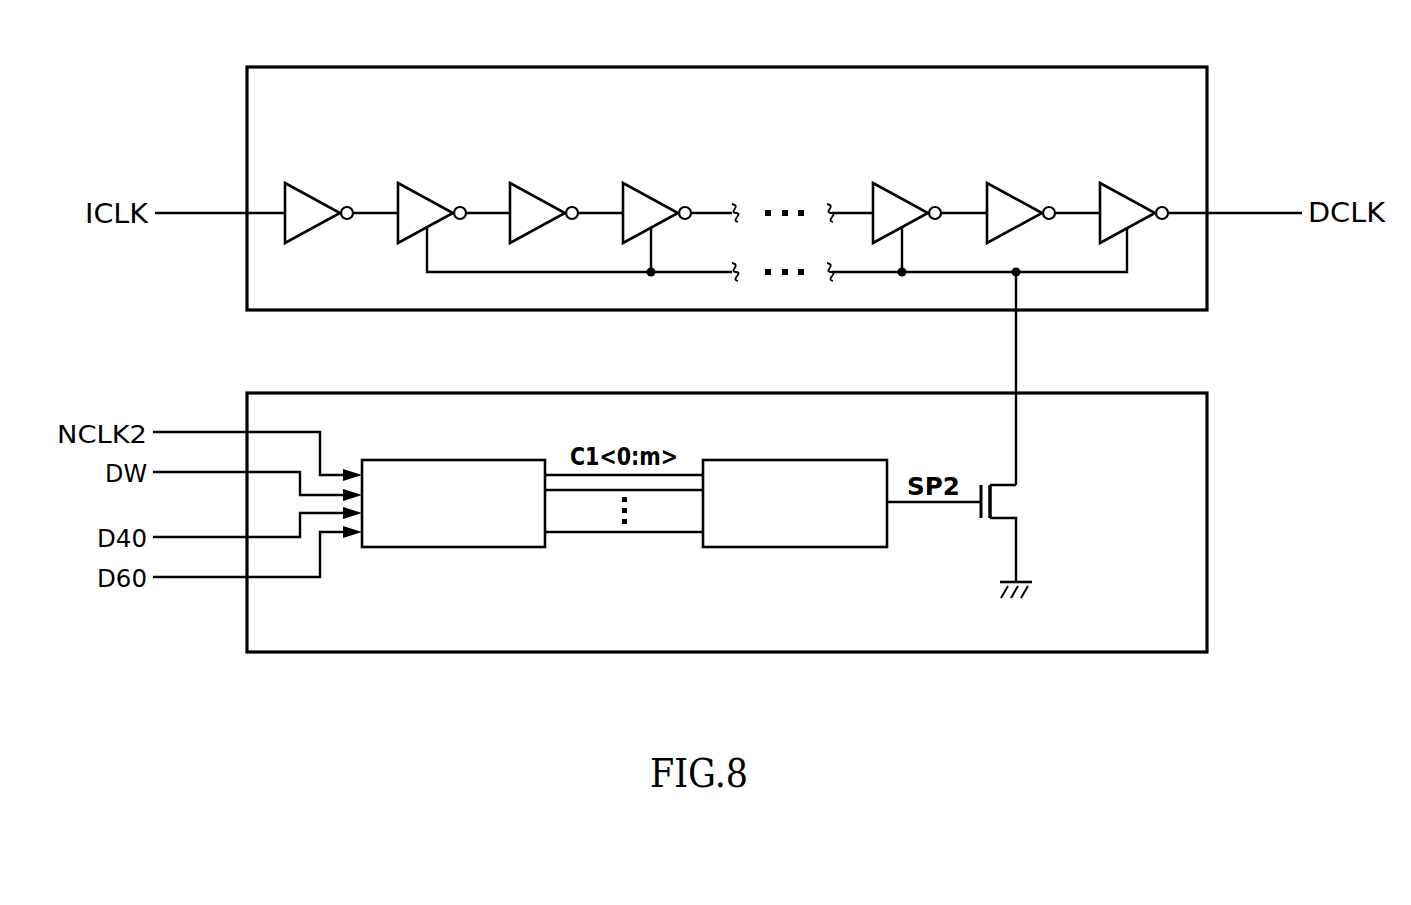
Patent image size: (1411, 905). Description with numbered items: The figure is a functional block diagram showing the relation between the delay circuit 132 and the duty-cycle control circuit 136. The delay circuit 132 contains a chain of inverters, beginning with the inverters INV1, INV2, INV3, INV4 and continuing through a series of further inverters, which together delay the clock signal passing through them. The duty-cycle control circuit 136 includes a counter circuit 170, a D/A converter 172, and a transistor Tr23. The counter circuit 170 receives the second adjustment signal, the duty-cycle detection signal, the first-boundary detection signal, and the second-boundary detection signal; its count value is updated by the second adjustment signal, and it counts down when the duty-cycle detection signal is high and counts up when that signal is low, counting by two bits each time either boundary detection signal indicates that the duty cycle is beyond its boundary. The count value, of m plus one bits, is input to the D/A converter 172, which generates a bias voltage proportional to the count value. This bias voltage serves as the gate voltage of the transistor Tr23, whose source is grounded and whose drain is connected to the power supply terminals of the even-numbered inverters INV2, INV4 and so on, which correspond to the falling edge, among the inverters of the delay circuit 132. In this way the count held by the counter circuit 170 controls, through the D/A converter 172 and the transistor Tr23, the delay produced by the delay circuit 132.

The delay circuit 132 is at (727, 67).
The duty-cycle control circuit 136 is at (727, 652).
The counter circuit 170 is at (457, 460).
The D/A converter 172 is at (797, 460).
The transistor Tr23 is at (984, 541).
The inverter INV1 is at (320, 195).
The inverter INV2 is at (433, 195).
The inverter INV3 is at (545, 195).
The inverter INV4 is at (656, 195).